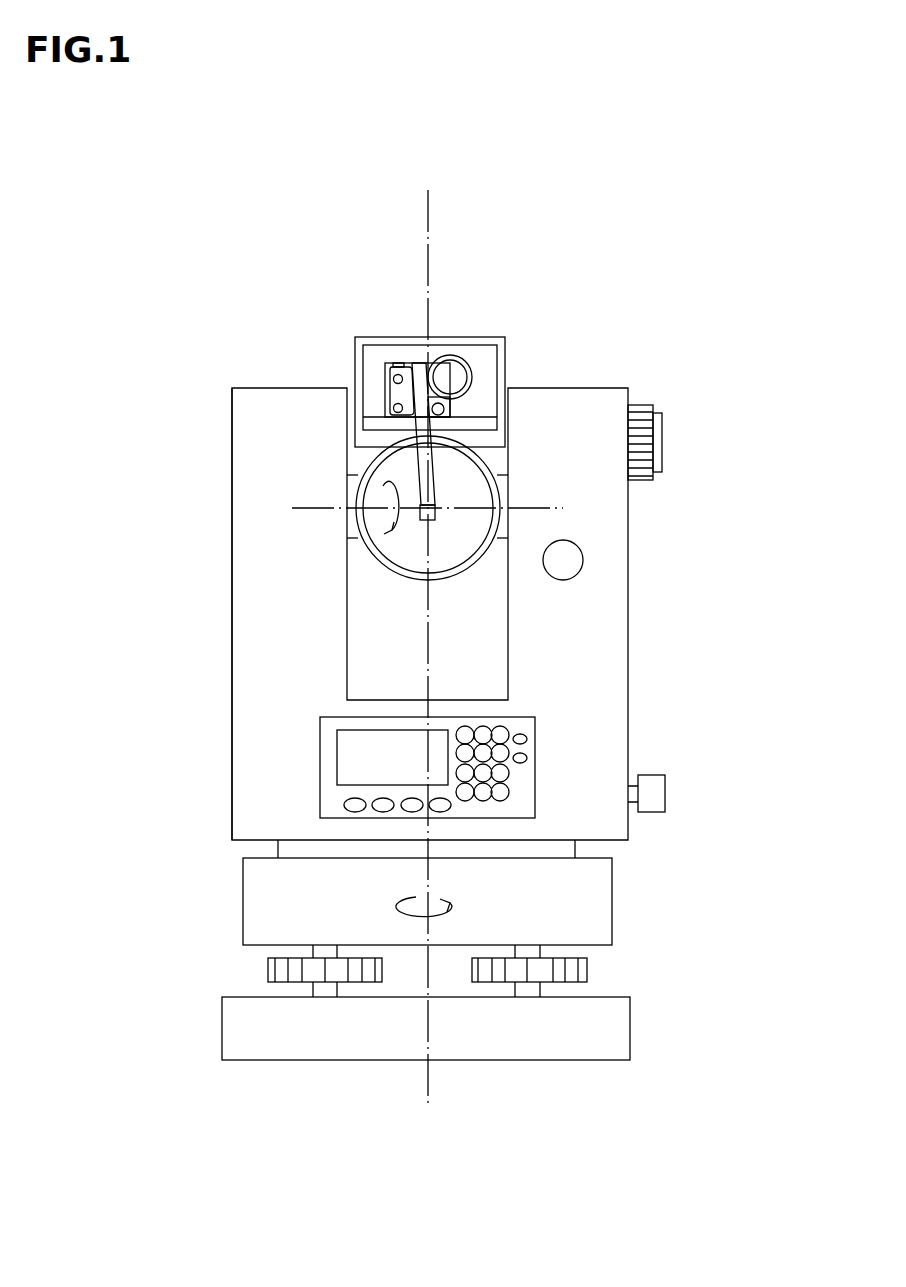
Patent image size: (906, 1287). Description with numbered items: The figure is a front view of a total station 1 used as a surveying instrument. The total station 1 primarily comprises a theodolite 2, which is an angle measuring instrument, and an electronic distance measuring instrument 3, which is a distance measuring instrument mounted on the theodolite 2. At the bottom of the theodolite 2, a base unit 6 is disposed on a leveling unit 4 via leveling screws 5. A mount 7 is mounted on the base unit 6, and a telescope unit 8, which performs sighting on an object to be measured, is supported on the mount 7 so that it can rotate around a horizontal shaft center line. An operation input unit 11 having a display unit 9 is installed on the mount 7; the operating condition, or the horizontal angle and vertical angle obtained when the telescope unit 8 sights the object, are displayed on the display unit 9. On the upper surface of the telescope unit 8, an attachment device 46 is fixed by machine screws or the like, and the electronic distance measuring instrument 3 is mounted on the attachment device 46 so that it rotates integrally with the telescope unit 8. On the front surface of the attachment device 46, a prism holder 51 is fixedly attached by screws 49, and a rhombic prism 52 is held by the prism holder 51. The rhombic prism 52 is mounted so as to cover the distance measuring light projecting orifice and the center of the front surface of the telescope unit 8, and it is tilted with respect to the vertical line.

The total station 1 is at (611, 239).
The theodolite 2 is at (641, 556).
The electronic distance measuring instrument 3 is at (470, 337).
The leveling unit 4 is at (630, 1027).
The leveling screws 5 is at (587, 973).
The base unit 6 is at (612, 893).
The mount 7 is at (232, 526).
The telescope unit 8 is at (362, 550).
The display unit 9 is at (352, 756).
The operation input unit 11 is at (527, 717).
The attachment device 46 is at (369, 324).
The screws 49 is at (386, 400).
The prism holder 51 is at (397, 362).
The rhombic prism 52 is at (416, 518).